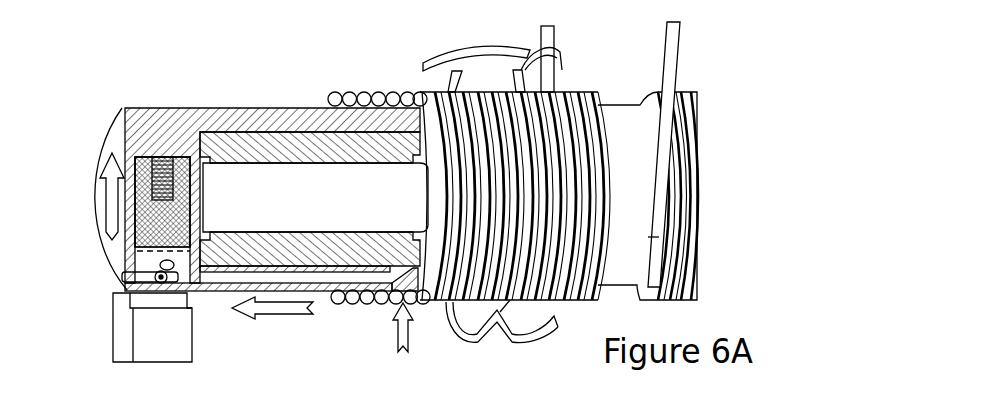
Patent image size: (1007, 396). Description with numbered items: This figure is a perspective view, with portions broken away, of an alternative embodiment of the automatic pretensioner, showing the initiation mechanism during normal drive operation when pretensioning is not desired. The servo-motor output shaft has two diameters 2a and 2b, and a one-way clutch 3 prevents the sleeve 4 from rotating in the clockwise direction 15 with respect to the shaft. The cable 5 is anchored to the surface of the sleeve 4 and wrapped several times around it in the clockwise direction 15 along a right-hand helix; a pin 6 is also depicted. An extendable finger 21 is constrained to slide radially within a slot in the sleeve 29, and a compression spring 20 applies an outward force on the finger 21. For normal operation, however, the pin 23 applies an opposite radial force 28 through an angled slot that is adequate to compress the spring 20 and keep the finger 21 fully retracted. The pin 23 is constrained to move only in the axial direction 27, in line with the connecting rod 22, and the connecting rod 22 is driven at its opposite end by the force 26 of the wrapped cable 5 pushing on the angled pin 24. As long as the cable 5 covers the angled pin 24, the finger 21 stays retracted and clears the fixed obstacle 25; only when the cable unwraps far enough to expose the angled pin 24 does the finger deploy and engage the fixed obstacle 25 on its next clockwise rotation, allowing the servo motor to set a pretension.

The shaft diameter 2a is at (227, 192).
The shaft diameter 2b is at (620, 122).
The one-way clutch 3 is at (268, 148).
The sleeve 4 is at (278, 122).
The cable 5 is at (533, 35).
The release pin 6 is at (656, 45).
The clockwise direction 15 is at (535, 338).
The compression spring 20 is at (163, 175).
The extendable finger 21 is at (162, 231).
The connecting rod 22 is at (215, 275).
The pin 23 is at (163, 280).
The angled pin 24 is at (403, 280).
The fixed obstacle 25 is at (126, 339).
The force of wrapped cable 26 is at (403, 328).
The axial direction 27 is at (282, 307).
The radial force 28 is at (112, 190).
The sleeve 29 is at (118, 260).